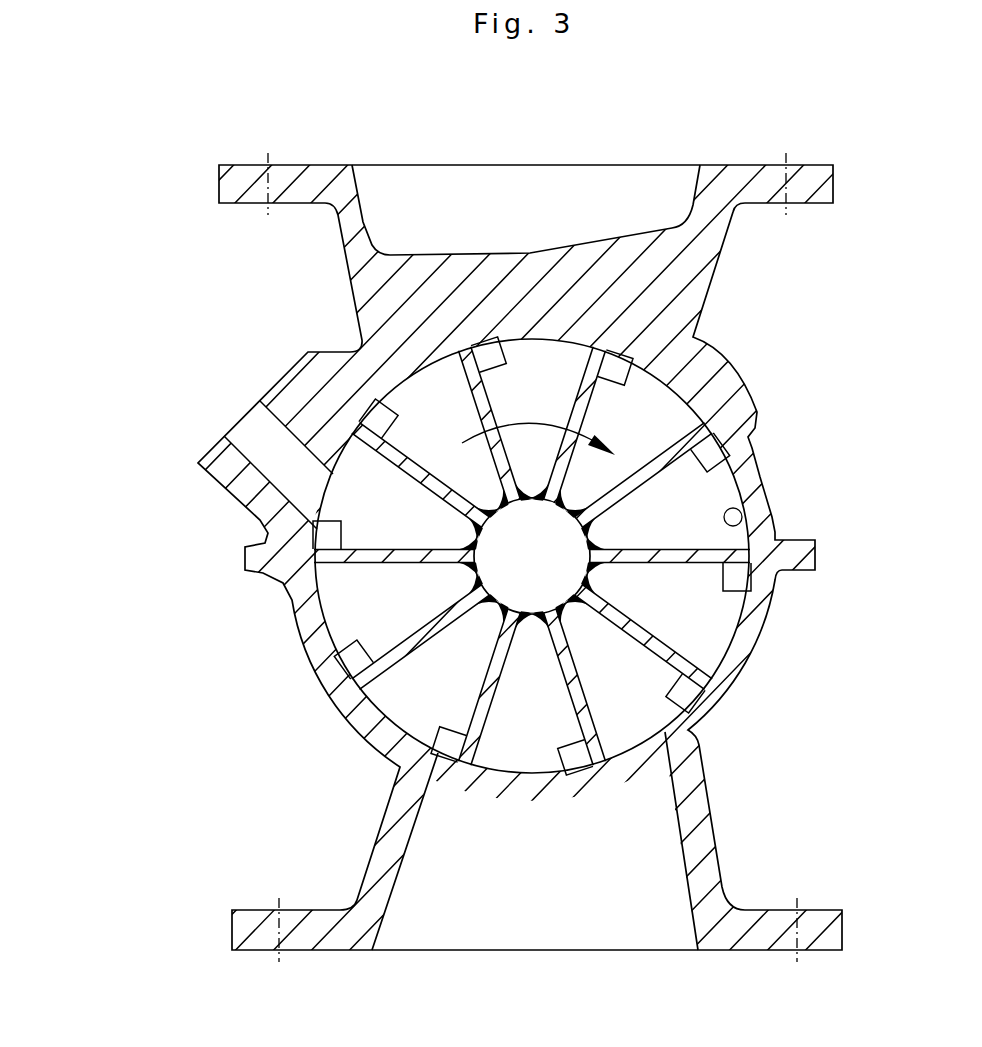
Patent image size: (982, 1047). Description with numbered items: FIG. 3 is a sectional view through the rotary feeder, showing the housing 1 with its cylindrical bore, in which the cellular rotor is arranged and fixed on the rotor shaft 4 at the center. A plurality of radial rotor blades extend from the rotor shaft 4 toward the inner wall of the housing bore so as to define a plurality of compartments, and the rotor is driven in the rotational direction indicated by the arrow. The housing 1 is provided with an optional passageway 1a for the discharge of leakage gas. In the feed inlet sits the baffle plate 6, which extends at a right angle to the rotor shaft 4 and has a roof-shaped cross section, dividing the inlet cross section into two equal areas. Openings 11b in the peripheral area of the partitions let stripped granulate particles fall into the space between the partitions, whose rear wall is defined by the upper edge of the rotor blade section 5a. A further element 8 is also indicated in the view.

The housing 1 is at (315, 676).
The passageway 1a is at (296, 472).
The rotor shaft 4 is at (541, 562).
The rotor blade section 5a is at (397, 470).
The baffle plate 6 is at (448, 255).
The sealing ring 8 is at (745, 528).
The opening 11b is at (480, 357).